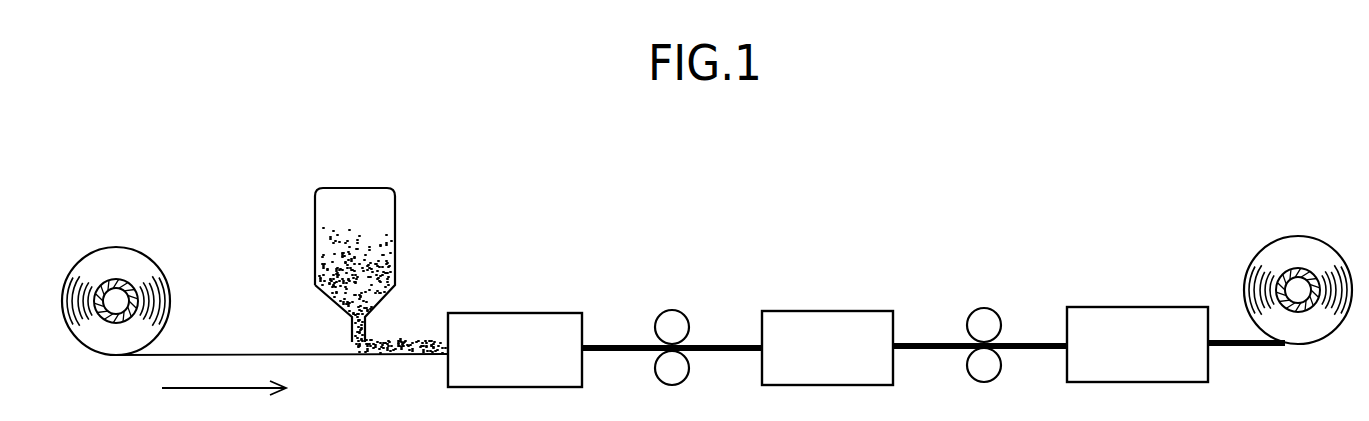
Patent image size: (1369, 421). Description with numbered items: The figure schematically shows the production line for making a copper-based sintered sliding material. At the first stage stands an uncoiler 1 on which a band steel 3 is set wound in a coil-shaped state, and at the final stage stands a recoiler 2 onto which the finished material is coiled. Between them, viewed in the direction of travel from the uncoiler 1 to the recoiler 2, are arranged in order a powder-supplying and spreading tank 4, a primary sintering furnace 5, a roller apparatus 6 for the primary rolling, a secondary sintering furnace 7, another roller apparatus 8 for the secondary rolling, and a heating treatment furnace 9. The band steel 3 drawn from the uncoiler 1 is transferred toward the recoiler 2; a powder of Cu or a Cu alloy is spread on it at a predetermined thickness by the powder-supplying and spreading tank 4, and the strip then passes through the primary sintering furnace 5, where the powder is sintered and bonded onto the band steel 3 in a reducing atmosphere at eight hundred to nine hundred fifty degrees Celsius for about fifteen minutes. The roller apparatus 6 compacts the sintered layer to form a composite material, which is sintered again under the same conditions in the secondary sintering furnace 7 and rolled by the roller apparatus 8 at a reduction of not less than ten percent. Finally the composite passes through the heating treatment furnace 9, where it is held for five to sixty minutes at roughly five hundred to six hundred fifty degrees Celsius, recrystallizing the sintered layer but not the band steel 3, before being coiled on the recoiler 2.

The uncoiler 1 is at (118, 282).
The recoiler 2 is at (1313, 268).
The band steel 3 is at (250, 354).
The powder-supplying and spreading tank 4 is at (397, 210).
The primary sintering furnace 5 is at (537, 313).
The roller apparatus for the primary rolling 6 is at (677, 309).
The secondary sintering furnace 7 is at (821, 311).
The roller apparatus for the secondary rolling 8 is at (988, 308).
The heating treatment furnace 9 is at (1131, 307).